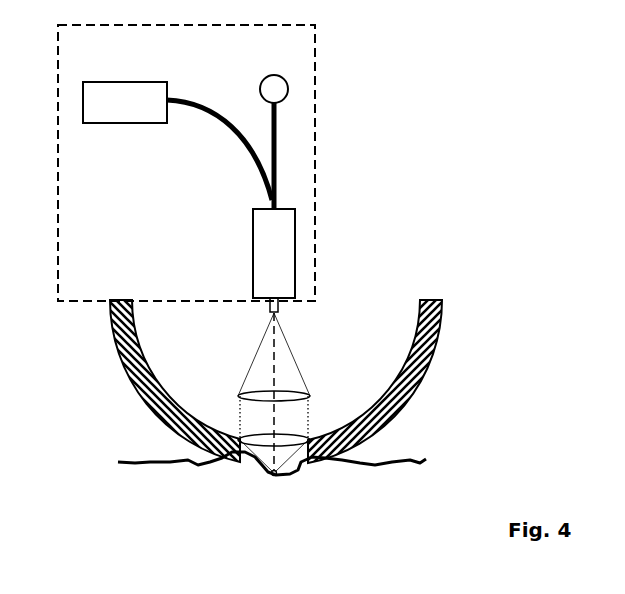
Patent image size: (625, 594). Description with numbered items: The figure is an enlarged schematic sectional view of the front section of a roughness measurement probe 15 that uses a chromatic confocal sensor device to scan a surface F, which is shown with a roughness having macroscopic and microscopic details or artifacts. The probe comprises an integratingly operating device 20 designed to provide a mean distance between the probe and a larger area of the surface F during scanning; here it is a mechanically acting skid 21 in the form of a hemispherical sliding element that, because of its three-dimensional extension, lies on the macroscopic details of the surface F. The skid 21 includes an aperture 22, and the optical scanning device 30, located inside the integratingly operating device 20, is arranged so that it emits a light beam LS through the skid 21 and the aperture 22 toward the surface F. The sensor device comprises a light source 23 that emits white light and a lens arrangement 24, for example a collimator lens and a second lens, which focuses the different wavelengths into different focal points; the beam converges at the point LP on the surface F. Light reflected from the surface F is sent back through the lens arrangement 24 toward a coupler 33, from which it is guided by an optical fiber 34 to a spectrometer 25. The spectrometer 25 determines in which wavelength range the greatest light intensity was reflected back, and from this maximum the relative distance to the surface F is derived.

The roughness measurement probe 15 is at (511, 67).
The integratingly operating device 20 is at (458, 340).
The skid 21 is at (157, 412).
The aperture 22 is at (247, 409).
The light source 23 is at (278, 88).
The lens arrangement 24 is at (333, 367).
The spectrometer 25 is at (108, 87).
The optical scanning device 30 is at (360, 176).
The coupler 33 is at (288, 263).
The optical fiber 34 is at (246, 144).
The light beam LS is at (272, 372).
The light spot LP is at (275, 477).
The surface F is at (424, 458).